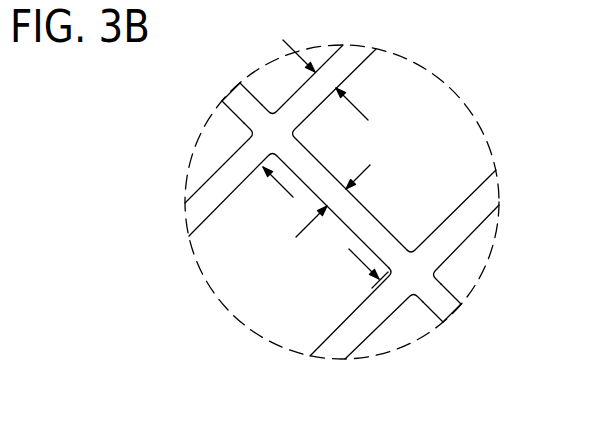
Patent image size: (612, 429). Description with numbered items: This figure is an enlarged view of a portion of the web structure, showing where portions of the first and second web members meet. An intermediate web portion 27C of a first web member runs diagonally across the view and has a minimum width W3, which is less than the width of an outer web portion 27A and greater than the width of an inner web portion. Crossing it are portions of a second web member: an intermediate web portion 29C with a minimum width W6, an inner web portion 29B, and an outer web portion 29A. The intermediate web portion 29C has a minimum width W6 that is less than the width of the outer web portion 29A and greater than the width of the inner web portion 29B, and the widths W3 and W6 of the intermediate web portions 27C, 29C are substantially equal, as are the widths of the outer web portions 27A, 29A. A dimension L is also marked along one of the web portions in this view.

The outer web portion 27A is at (462, 230).
The intermediate web portion 27C is at (356, 66).
The outer web portion 29A is at (442, 300).
The inner web portion 29B is at (238, 107).
The intermediate web portion 29C is at (383, 238).
The minimum width W3 is at (312, 65).
The minimum width W6 is at (316, 219).
The length L is at (293, 197).